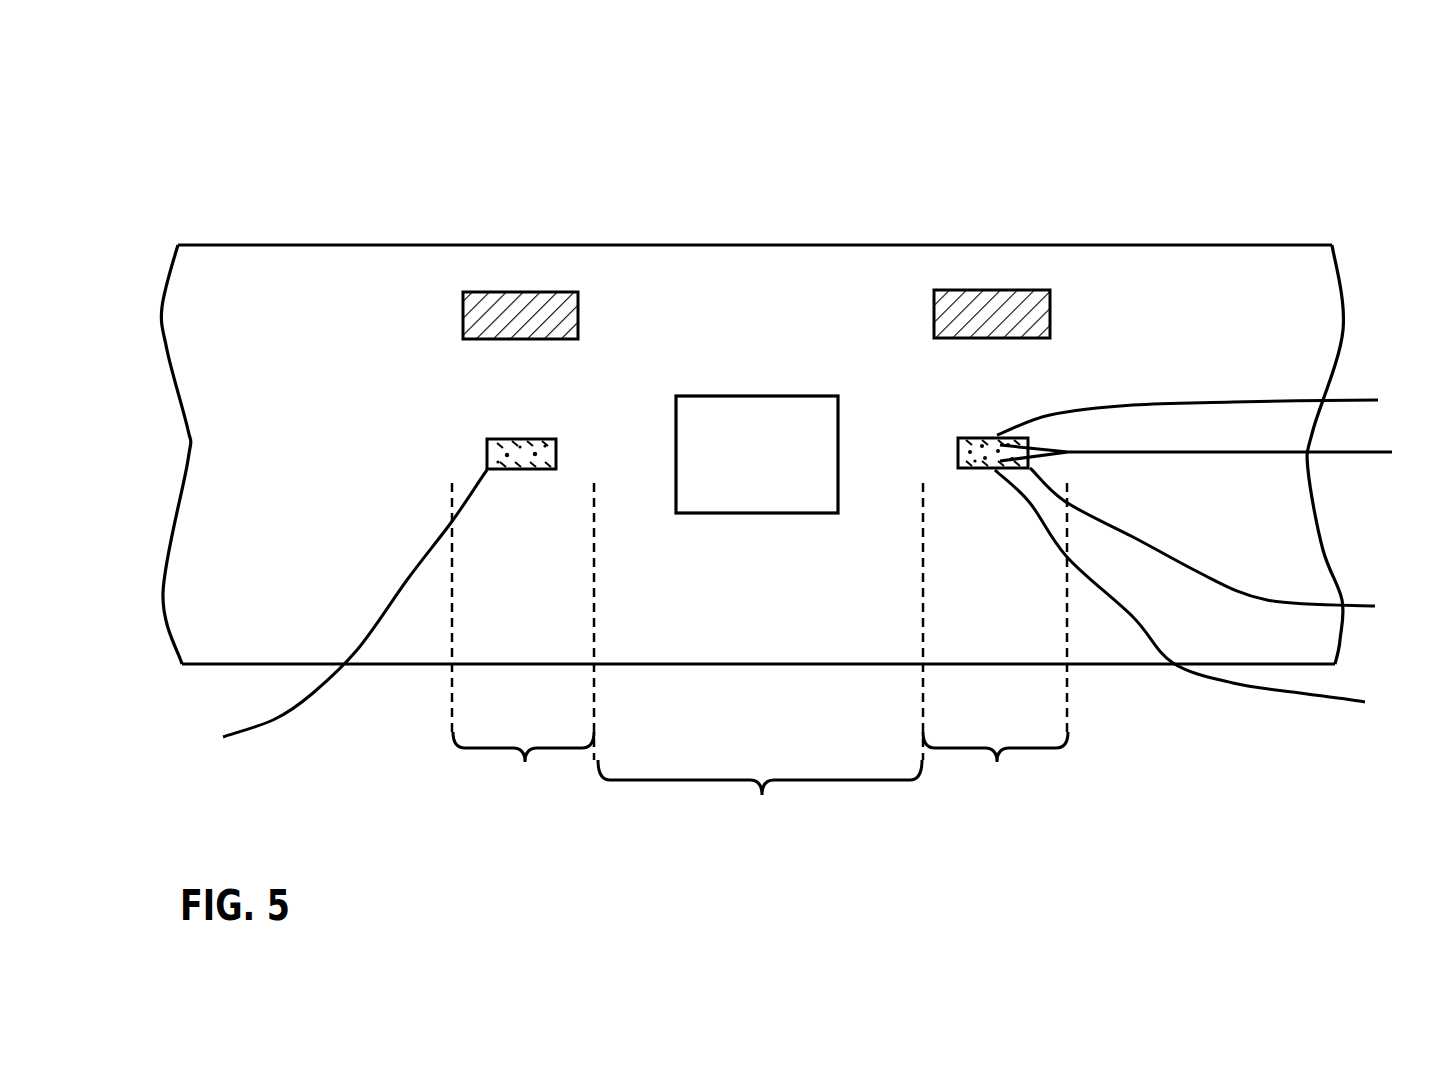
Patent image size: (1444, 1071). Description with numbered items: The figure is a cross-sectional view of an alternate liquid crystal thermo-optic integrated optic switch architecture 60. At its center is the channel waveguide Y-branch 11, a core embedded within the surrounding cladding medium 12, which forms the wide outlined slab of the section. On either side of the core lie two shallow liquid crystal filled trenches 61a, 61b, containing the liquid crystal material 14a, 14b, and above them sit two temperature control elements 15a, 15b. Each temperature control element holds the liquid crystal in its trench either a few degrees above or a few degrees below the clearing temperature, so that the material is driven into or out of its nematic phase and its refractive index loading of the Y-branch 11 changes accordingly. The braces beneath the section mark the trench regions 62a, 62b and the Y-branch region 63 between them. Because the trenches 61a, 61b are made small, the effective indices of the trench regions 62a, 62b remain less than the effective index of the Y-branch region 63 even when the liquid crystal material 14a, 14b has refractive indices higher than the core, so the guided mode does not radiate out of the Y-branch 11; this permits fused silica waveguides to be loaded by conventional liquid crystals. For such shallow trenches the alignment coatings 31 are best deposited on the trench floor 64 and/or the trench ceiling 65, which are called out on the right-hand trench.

The alternate switch architecture 60 is at (647, 281).
The channel waveguide Y-branch 11 is at (757, 417).
The cladding medium 12 is at (1225, 267).
The liquid crystal material 14a is at (497, 443).
The liquid crystal material 14b is at (958, 450).
The temperature control element 15a is at (512, 292).
The temperature control element 15b is at (997, 290).
The alignment coatings 31 is at (1216, 453).
The liquid crystal filled trench 61a is at (323, 614).
The liquid crystal filled trench 61b is at (1231, 546).
The trench region 62a is at (523, 644).
The trench region 62b is at (995, 644).
The Y-branch region 63 is at (760, 800).
The trench floor 64 is at (1201, 596).
The trench ceiling 65 is at (1208, 410).